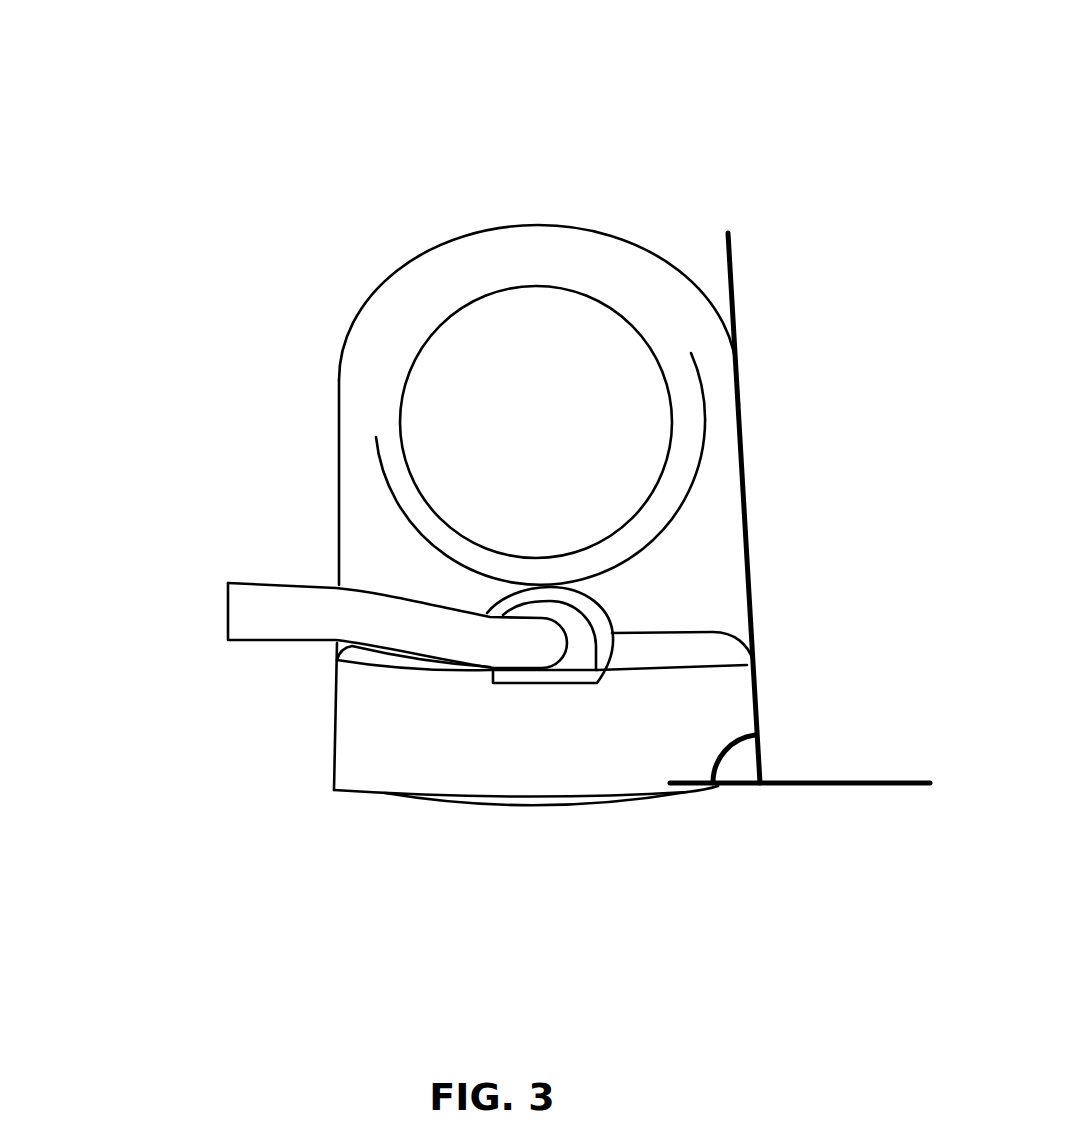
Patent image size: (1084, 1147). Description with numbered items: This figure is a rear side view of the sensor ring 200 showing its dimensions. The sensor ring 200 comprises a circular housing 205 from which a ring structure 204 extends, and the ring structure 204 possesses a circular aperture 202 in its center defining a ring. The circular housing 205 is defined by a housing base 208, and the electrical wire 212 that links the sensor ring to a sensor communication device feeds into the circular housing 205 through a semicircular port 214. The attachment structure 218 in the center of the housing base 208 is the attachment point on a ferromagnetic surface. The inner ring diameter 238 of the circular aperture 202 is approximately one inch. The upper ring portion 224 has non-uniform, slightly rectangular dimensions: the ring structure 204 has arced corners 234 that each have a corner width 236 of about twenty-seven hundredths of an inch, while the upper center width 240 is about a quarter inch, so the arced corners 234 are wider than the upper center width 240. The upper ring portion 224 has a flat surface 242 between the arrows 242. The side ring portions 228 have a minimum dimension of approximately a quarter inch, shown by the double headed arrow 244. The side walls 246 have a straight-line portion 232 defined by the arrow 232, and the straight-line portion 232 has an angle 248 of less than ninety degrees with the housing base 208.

The sensor ring 200 is at (512, 34).
The circular aperture 202 is at (536, 422).
The ring structure 204 is at (638, 267).
The circular housing 205 is at (430, 733).
The housing base 208 is at (358, 795).
The electrical wire 212 is at (306, 642).
The semicircular port 214 is at (527, 612).
The attachment structure 218 is at (570, 807).
The upper ring portion 224 is at (480, 225).
The side ring portion 228 is at (340, 355).
The straight-line portion 232 is at (303, 786).
The arced corners 234 is at (693, 275).
The corner width 236 is at (392, 275).
The inner ring diameter 238 is at (721, 412).
The upper center width 240 is at (540, 271).
The flat surface 242 is at (579, 213).
The double headed arrow 244 is at (697, 420).
The side walls 246 is at (337, 575).
The angle 248 is at (732, 744).